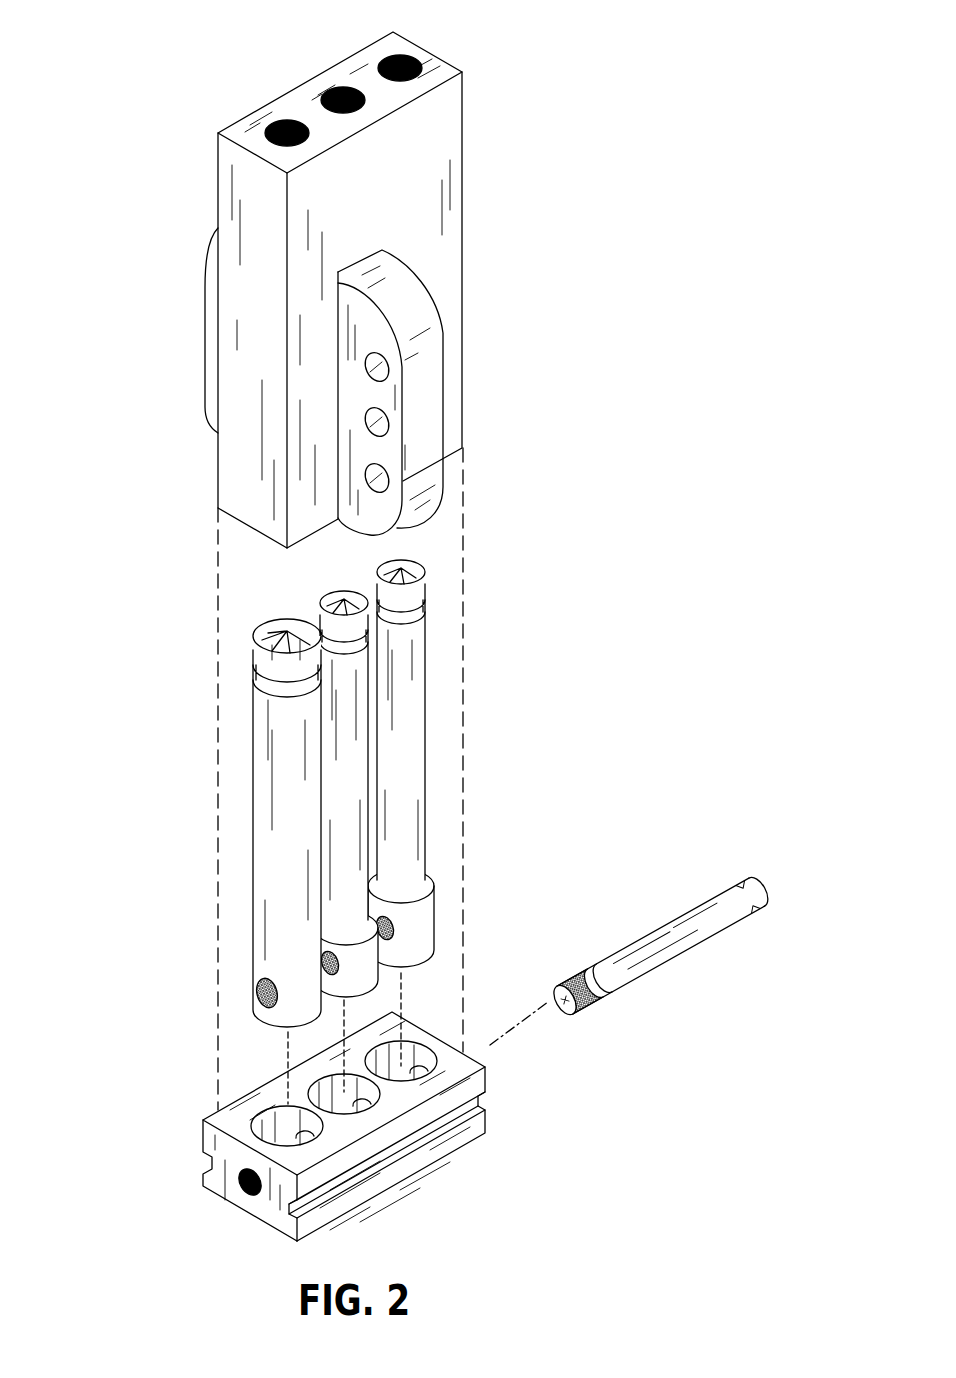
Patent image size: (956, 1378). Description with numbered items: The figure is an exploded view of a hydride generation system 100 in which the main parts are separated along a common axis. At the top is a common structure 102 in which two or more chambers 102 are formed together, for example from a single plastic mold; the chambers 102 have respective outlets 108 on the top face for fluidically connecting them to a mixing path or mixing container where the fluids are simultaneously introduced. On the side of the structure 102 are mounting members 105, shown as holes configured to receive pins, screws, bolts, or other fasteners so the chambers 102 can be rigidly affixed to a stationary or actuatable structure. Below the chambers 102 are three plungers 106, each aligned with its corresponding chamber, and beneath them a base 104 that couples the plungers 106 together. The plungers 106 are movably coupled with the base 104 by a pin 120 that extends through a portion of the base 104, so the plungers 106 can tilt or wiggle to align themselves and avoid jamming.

The hydride generation system 100 is at (150, 54).
The chambers 102 is at (429, 48).
The base 104 is at (257, 1213).
The mounting members 105 is at (365, 415).
The plungers 106 is at (253, 762).
The outlets 108 is at (390, 56).
The pin 120 is at (668, 920).